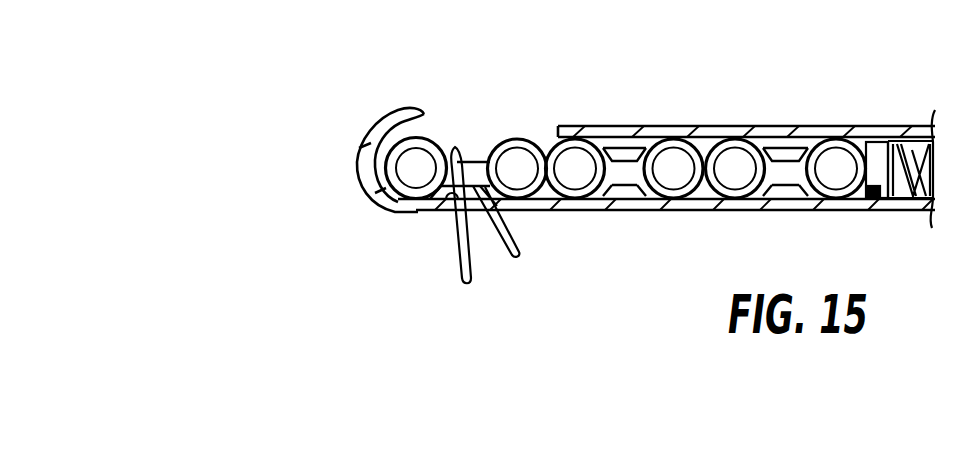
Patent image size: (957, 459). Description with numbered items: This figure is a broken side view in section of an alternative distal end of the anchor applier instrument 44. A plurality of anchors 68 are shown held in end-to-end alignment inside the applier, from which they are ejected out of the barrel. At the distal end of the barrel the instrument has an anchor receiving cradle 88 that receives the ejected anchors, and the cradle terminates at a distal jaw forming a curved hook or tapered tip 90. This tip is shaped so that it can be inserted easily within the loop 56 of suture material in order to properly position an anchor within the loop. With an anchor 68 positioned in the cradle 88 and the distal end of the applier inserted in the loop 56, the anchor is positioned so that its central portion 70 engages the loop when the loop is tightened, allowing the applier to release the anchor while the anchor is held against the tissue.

The anchor applier instrument 44 is at (660, 128).
The loop of suture material 56 is at (456, 146).
The anchors 68 is at (781, 188).
The central portion 70 is at (482, 157).
The anchor receiving cradle 88 is at (447, 200).
The curved hook or tapered tip 90 is at (409, 108).